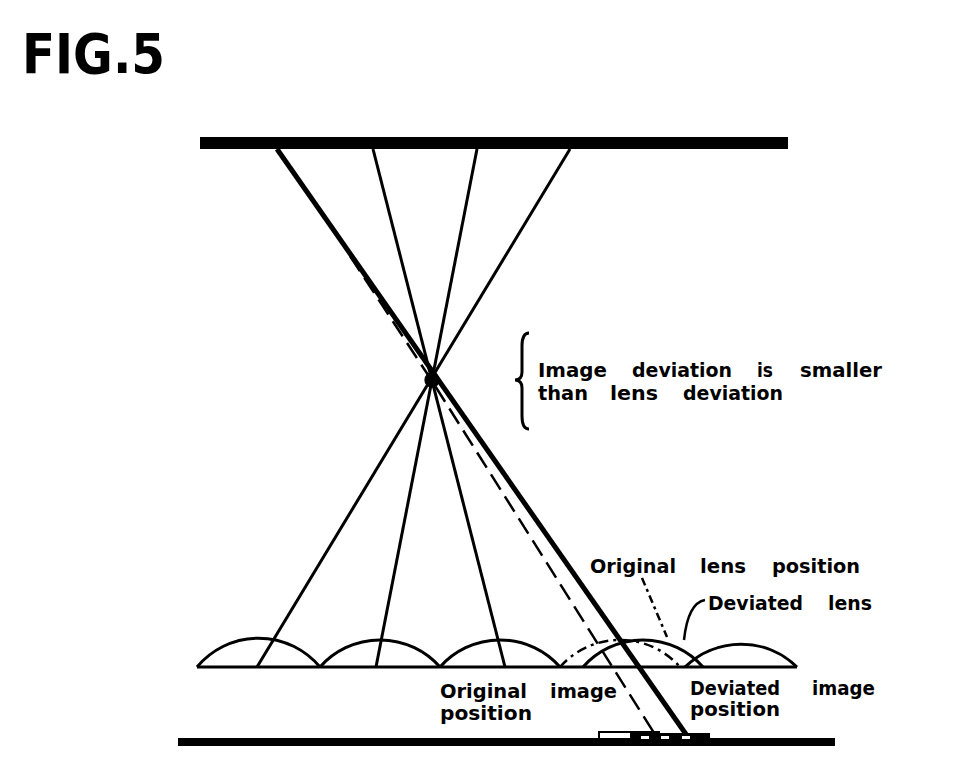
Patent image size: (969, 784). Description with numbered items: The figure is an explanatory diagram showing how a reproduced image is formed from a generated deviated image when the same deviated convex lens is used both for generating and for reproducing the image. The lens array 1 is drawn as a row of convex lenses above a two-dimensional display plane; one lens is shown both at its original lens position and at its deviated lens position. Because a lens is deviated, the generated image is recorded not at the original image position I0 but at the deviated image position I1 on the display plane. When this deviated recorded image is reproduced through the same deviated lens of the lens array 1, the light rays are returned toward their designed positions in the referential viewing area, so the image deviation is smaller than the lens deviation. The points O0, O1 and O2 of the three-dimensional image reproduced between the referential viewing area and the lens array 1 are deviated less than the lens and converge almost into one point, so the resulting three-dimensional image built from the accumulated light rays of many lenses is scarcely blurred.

The lens array 1 is at (785, 652).
The original object point O0 is at (410, 384).
The reproduced image point O1 is at (471, 405).
The reproduced image point O2 is at (465, 357).
The original image position I0 is at (616, 720).
The deviated image position I1 is at (680, 726).